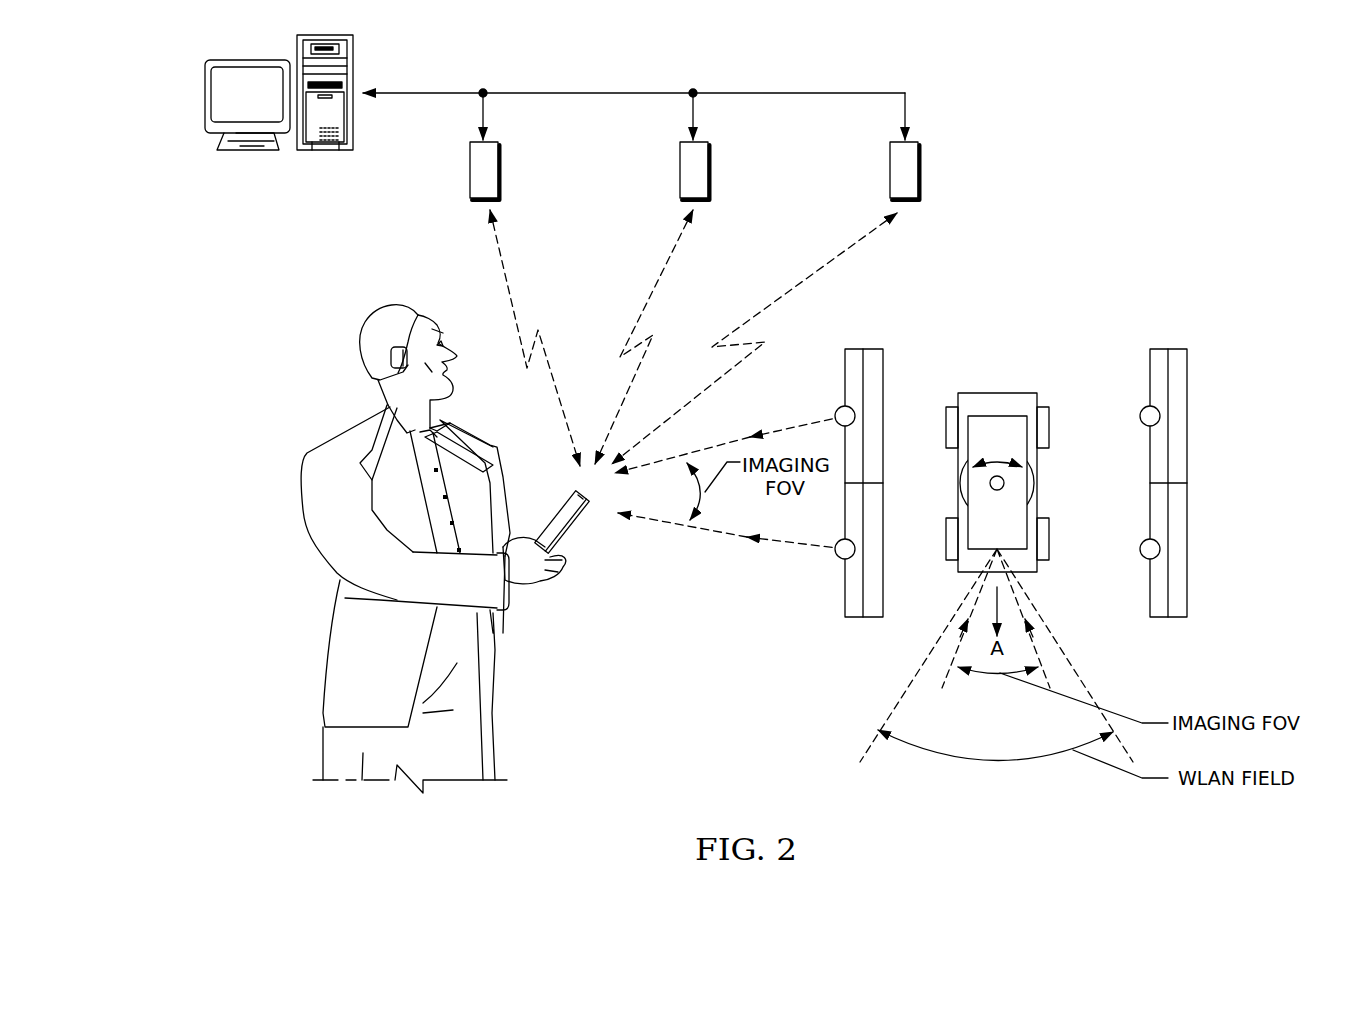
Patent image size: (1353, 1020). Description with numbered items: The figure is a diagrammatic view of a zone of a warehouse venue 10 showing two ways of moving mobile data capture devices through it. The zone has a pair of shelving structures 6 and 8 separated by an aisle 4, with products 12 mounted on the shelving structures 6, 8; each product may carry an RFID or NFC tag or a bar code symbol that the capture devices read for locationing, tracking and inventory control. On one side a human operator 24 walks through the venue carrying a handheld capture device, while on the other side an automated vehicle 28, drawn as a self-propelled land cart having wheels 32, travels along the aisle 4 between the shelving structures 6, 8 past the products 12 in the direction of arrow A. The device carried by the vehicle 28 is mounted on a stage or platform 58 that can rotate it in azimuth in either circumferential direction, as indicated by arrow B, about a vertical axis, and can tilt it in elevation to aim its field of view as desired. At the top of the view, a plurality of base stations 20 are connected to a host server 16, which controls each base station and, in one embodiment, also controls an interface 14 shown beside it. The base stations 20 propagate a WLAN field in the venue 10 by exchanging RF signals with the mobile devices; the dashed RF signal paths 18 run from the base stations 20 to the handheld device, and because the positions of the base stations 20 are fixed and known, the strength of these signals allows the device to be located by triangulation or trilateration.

The aisle 4 is at (908, 578).
The shelving structure 6 is at (873, 349).
The shelving structure 8 is at (1178, 349).
The venue 10 is at (1111, 629).
The products 12 is at (837, 409).
The interface 14 is at (205, 98).
The host server 16 is at (330, 150).
The RF signal paths 18 is at (507, 288).
The base stations 20 is at (470, 169).
The human operator 24 is at (300, 503).
The automated vehicle 28 is at (997, 459).
The wheels 32 is at (946, 428).
The stage or platform 58 is at (960, 484).